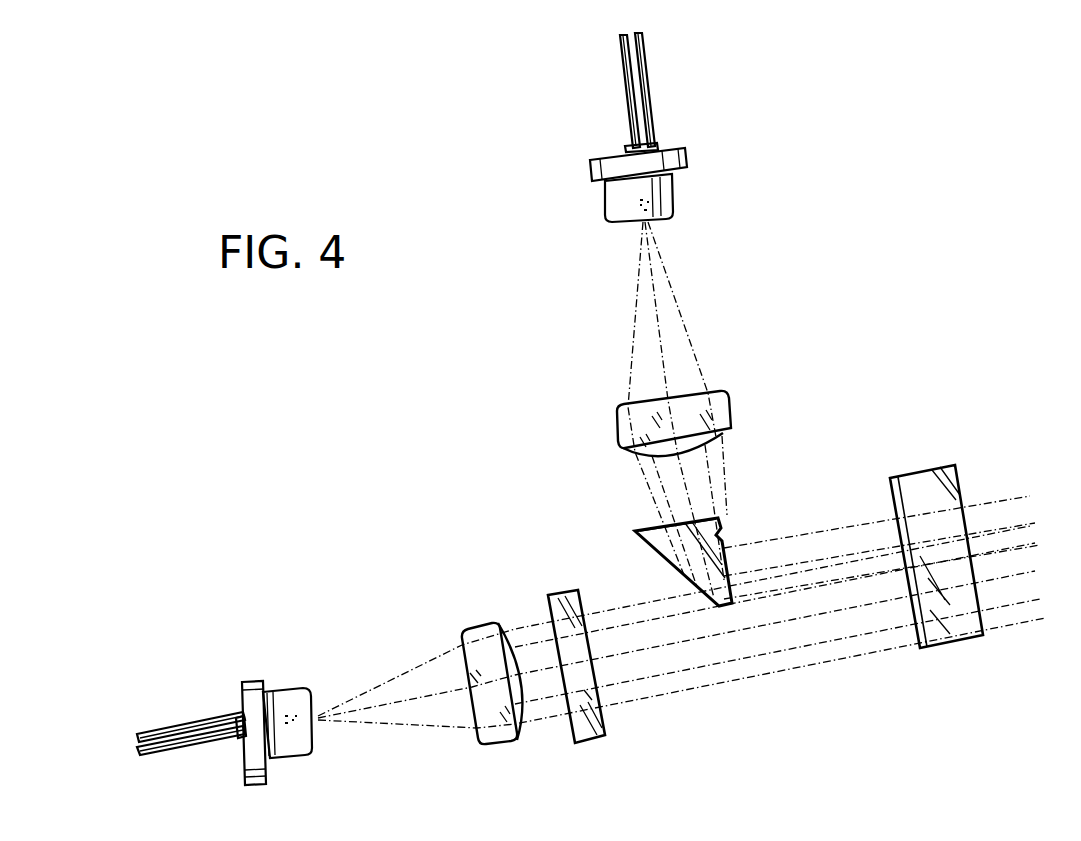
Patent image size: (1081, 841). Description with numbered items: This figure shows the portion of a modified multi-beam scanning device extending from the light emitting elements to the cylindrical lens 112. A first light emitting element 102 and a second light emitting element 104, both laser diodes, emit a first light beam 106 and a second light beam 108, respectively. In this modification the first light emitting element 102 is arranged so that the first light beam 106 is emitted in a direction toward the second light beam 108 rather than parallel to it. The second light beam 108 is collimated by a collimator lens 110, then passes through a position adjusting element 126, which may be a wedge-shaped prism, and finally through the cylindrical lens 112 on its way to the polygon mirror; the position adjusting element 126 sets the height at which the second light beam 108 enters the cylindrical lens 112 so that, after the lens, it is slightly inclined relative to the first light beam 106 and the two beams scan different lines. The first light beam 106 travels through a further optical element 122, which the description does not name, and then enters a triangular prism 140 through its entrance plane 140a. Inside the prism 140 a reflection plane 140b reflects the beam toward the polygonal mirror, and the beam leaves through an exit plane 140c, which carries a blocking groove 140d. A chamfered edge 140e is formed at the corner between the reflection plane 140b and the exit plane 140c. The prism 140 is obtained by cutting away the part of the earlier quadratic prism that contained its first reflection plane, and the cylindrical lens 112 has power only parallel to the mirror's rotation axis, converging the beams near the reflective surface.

The first light emitting element 102 is at (684, 162).
The second light emitting element 104 is at (252, 681).
The first light beam 106 is at (631, 297).
The second light beam 108 is at (410, 730).
The collimator lens 110 is at (502, 744).
The cylindrical lens 112 is at (952, 648).
The collimating lens 122 is at (730, 406).
The position adjusting element 126 is at (612, 732).
The triangular prism 140 is at (622, 542).
The entrance plane 140a is at (700, 514).
The reflection plane 140b is at (653, 552).
The exit plane 140c is at (718, 521).
The blocking groove 140d is at (724, 536).
The chamfered edge 140e is at (732, 607).